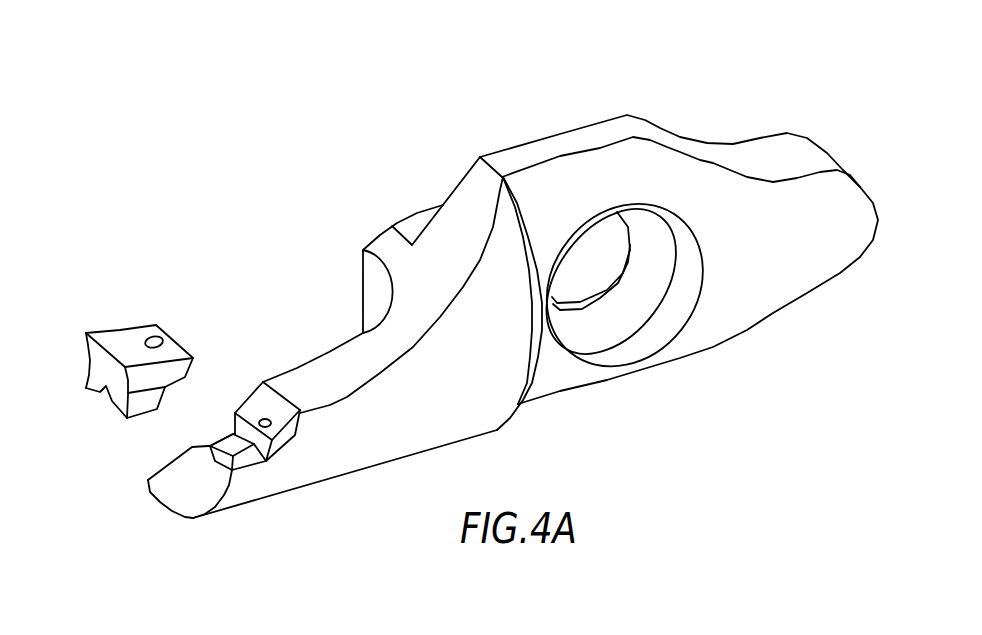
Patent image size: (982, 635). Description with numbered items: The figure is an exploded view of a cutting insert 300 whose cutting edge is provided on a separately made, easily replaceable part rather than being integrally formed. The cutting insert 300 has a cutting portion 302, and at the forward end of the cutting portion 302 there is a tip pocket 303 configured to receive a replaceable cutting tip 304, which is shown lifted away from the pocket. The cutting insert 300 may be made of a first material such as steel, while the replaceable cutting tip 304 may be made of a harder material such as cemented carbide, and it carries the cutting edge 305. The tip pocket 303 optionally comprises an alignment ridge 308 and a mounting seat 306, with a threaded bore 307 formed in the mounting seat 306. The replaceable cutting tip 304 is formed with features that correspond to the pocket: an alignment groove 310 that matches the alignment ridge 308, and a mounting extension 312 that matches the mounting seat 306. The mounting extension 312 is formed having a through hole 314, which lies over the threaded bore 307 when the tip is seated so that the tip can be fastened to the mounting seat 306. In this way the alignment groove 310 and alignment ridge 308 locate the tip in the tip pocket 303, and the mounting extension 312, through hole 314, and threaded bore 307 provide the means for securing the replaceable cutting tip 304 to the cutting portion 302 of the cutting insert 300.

The cutting insert 300 is at (573, 100).
The cutting portion 302 is at (380, 473).
The tip pocket 303 is at (240, 472).
The replaceable cutting tip 304 is at (146, 289).
The cutting edge 305 is at (111, 347).
The mounting seat 306 is at (238, 433).
The threaded bore 307 is at (260, 416).
The alignment ridge 308 is at (213, 457).
The alignment groove 310 is at (106, 401).
The mounting extension 312 is at (184, 353).
The through hole 314 is at (157, 340).